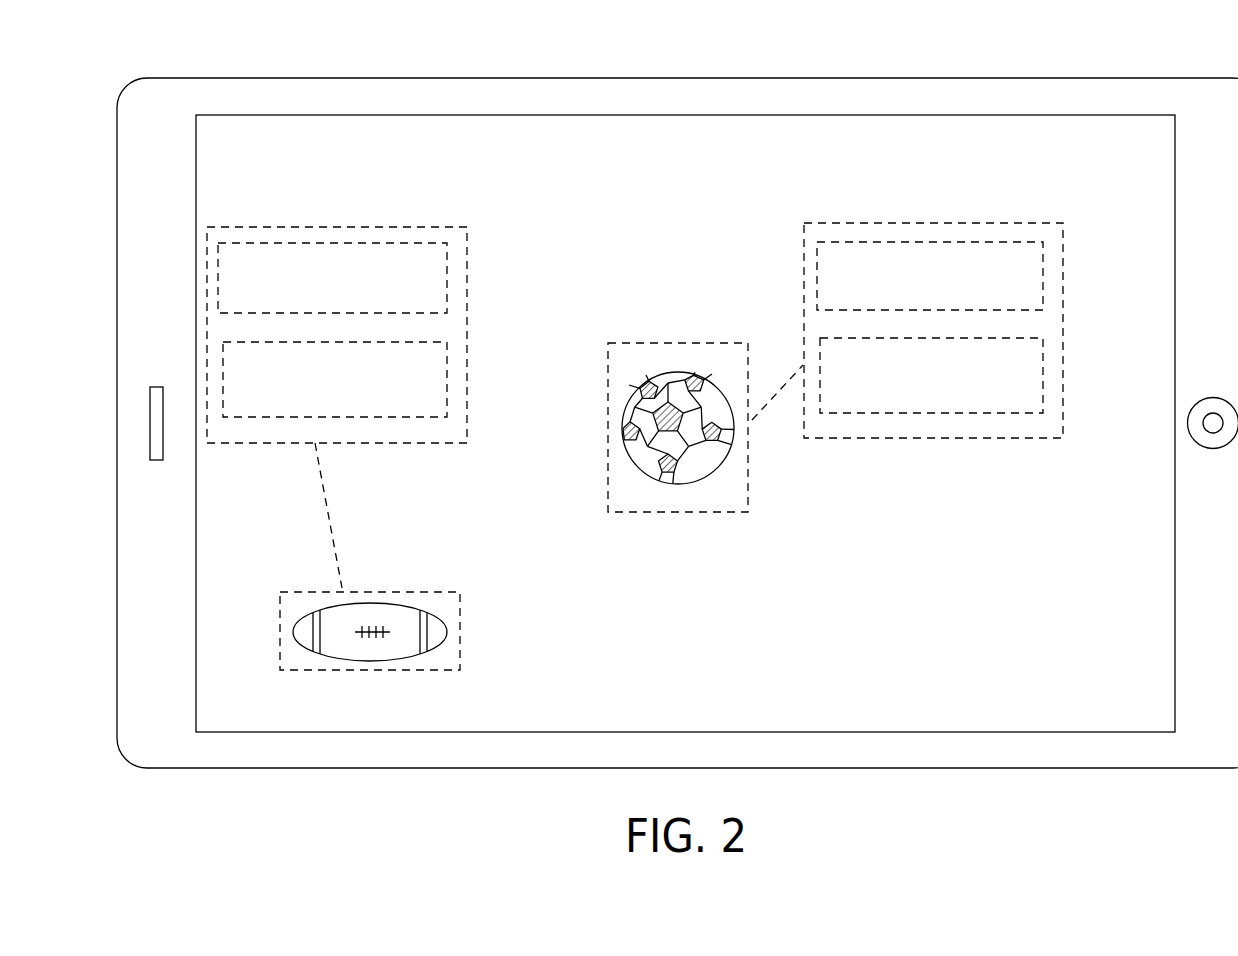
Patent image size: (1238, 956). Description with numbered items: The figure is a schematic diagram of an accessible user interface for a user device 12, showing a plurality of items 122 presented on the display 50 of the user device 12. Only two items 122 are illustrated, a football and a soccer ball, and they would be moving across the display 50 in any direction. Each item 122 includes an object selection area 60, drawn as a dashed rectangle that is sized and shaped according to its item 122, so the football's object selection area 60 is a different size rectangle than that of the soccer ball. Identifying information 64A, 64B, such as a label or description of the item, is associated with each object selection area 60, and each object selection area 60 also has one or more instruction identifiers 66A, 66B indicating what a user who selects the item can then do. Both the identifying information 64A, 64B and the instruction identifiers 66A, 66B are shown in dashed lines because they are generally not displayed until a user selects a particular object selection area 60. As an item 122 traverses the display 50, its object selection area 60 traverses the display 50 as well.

The user device 12 is at (1198, 78).
The display 50 is at (334, 164).
The object selection area 60 is at (487, 624).
The identifying information 64A is at (1033, 294).
The identifying information 64B is at (438, 294).
The instruction identifier 66A is at (1037, 394).
The instruction identifier 66B is at (442, 396).
The item 122 is at (598, 443).